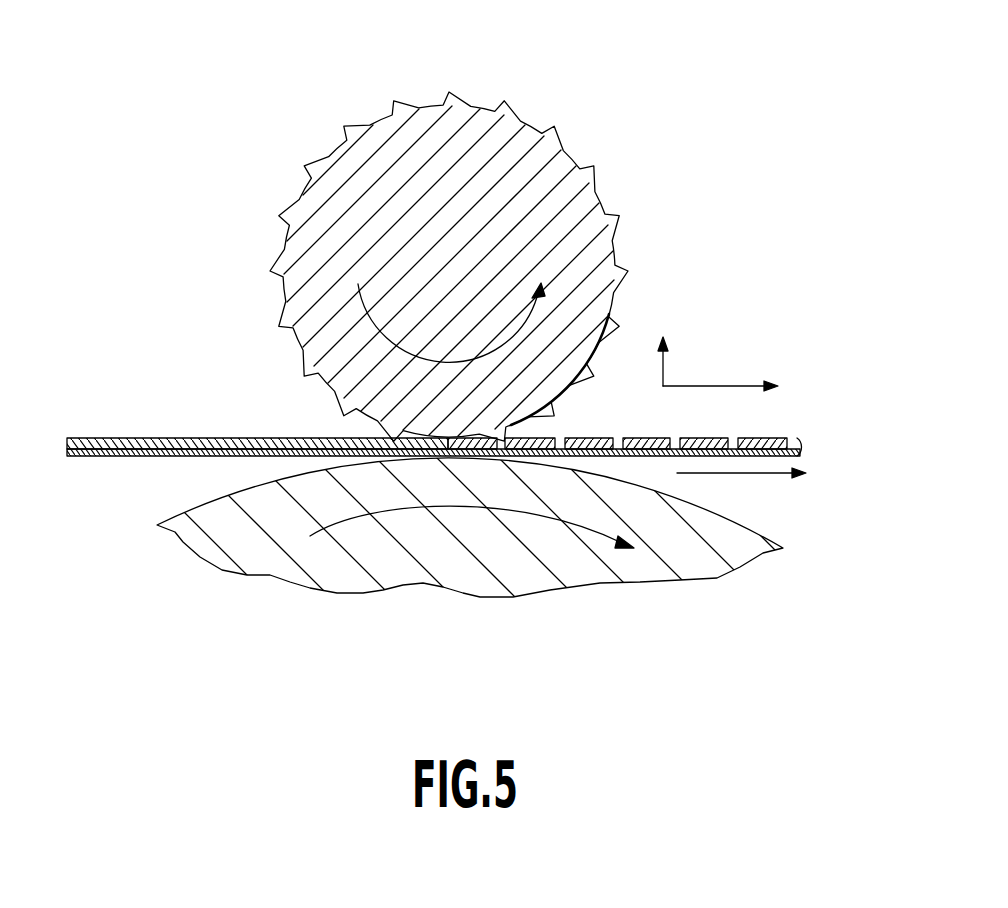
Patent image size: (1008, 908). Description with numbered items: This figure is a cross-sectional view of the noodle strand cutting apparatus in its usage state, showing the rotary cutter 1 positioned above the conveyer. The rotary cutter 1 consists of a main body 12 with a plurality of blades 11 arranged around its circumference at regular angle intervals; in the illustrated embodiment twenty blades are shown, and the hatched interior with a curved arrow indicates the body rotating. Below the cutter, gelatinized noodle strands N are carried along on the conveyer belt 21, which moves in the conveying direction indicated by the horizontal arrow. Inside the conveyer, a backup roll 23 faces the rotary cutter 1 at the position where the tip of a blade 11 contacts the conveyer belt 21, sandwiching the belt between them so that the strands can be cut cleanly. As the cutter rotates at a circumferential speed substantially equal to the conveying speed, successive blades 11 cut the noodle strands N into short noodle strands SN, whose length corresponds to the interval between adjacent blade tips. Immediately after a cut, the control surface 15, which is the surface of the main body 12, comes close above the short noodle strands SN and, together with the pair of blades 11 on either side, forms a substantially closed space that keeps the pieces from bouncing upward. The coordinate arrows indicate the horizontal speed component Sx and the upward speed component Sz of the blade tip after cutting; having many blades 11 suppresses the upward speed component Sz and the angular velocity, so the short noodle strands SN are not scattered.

The rotary cutter 1 is at (289, 181).
The blades 11 is at (598, 176).
The main body 12 is at (500, 193).
The control surface 15 is at (524, 421).
The noodle strands N is at (207, 437).
The conveyer belt 21 is at (137, 456).
The short noodle strands SN is at (752, 440).
The backup roll 23 is at (707, 532).
The upward speed component Sz is at (663, 368).
The speed component Sx is at (737, 387).